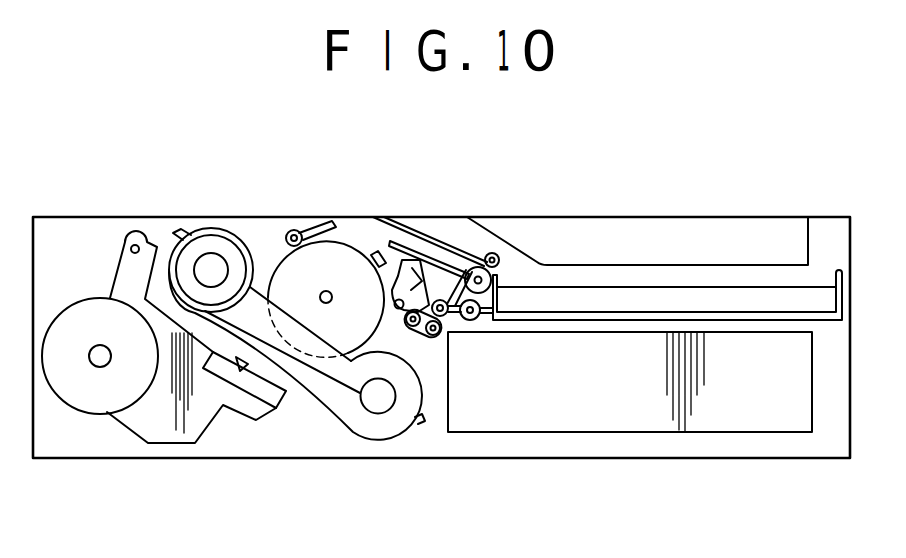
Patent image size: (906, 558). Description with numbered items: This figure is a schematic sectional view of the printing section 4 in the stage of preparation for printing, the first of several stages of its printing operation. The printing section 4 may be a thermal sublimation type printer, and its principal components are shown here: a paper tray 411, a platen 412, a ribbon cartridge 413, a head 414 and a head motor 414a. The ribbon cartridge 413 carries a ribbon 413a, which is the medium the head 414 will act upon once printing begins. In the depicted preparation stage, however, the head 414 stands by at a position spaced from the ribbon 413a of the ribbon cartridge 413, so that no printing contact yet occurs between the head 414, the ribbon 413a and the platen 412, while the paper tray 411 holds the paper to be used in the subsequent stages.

The printing section 4 is at (94, 217).
The paper tray 411 is at (607, 423).
The platen 412 is at (352, 255).
The ribbon cartridge 413 is at (223, 231).
The ribbon 413a is at (351, 407).
The head 414 is at (283, 397).
The head motor 414a is at (82, 412).